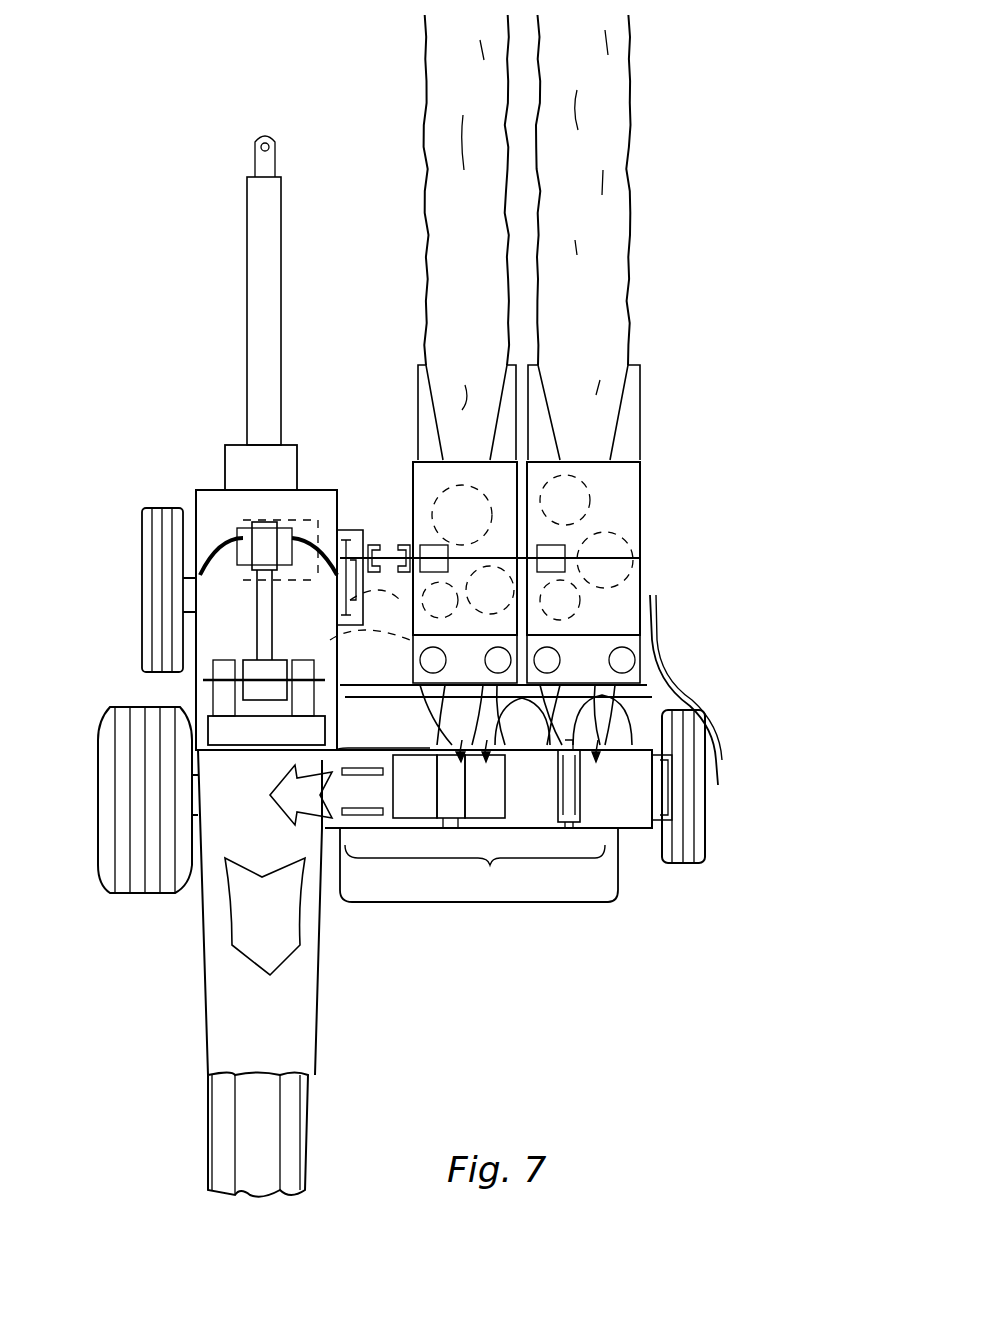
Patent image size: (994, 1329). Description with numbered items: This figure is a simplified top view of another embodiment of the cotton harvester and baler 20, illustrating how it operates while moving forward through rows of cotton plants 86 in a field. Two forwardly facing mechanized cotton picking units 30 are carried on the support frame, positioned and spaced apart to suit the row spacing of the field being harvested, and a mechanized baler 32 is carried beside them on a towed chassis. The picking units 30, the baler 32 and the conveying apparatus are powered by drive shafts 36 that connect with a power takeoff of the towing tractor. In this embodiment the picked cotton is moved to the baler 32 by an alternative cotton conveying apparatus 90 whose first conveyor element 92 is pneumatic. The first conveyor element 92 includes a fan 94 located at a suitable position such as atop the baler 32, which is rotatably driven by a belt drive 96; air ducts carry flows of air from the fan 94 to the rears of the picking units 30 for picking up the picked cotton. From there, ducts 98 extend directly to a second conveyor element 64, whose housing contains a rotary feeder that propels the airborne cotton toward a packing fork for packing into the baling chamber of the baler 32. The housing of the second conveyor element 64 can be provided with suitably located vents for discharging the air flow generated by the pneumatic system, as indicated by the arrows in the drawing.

The cotton harvester and baler 20 is at (744, 262).
The rows of cotton plants 86 is at (426, 48).
The mechanized cotton picking unit 30 is at (412, 468).
The drive shafts 36 is at (470, 562).
The fan 94 is at (245, 510).
The belt drive 96 is at (247, 620).
The mechanized baler 32 is at (196, 705).
The cotton conveying apparatus 90 is at (720, 684).
The ducts 98 is at (500, 697).
The first conveyor element 92 is at (676, 712).
The second conveyor element 64 is at (479, 865).